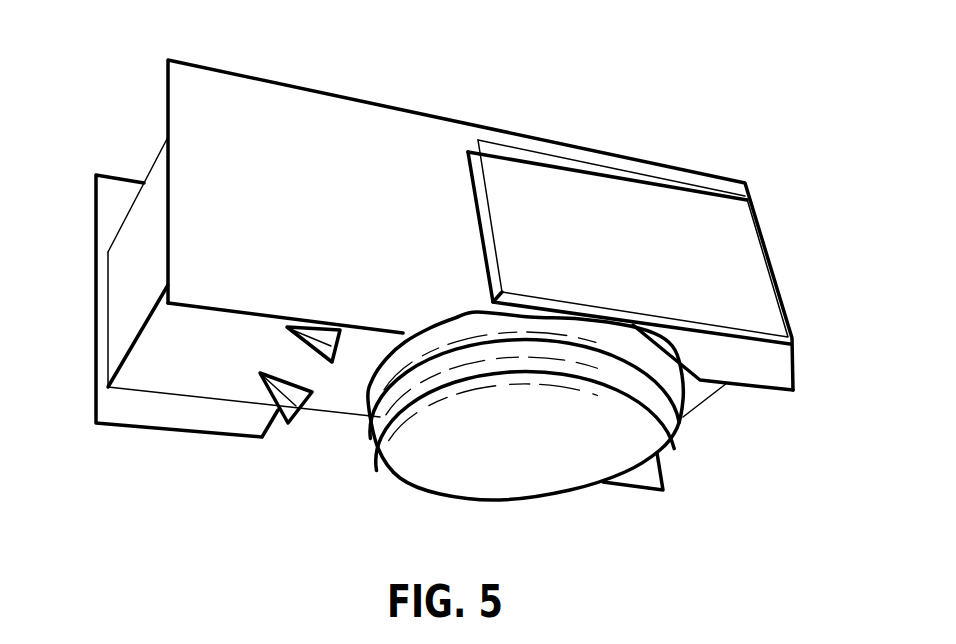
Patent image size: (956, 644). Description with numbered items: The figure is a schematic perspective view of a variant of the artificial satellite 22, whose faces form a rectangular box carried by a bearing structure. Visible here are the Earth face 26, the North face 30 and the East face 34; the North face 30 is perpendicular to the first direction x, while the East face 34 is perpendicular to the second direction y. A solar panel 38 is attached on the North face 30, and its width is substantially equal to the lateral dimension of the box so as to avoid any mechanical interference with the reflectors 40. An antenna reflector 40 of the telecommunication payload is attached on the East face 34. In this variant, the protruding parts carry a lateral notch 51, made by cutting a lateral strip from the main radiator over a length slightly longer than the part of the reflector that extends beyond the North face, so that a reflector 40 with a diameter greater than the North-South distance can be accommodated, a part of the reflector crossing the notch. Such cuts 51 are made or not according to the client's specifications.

The artificial satellite 22 is at (205, 497).
The Earth face 26 is at (157, 190).
The North face 30 is at (306, 136).
The East face 34 is at (347, 393).
The solar panels 38 is at (657, 207).
The reflectors 40 is at (518, 462).
The lateral notch 51 is at (703, 350).